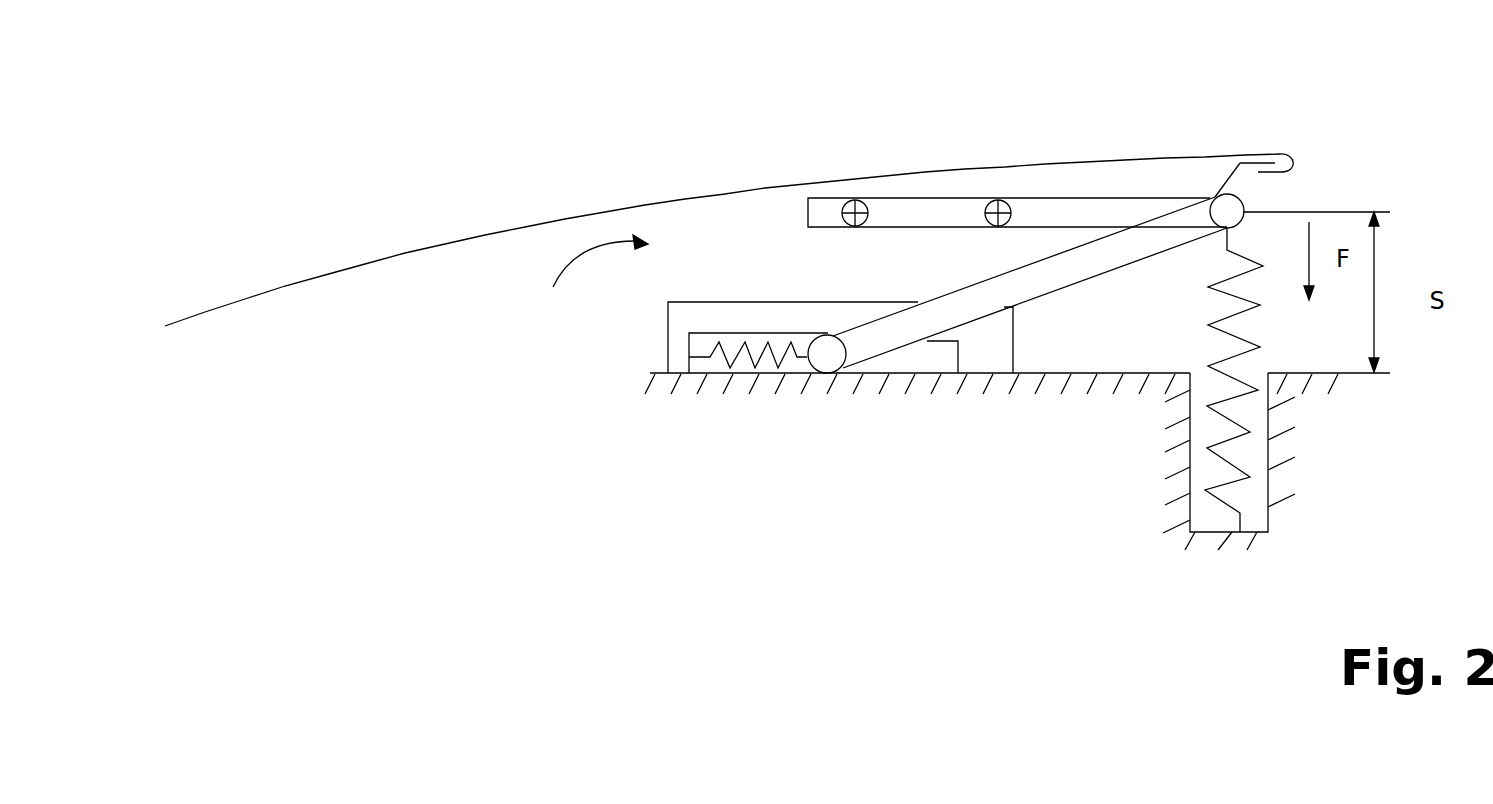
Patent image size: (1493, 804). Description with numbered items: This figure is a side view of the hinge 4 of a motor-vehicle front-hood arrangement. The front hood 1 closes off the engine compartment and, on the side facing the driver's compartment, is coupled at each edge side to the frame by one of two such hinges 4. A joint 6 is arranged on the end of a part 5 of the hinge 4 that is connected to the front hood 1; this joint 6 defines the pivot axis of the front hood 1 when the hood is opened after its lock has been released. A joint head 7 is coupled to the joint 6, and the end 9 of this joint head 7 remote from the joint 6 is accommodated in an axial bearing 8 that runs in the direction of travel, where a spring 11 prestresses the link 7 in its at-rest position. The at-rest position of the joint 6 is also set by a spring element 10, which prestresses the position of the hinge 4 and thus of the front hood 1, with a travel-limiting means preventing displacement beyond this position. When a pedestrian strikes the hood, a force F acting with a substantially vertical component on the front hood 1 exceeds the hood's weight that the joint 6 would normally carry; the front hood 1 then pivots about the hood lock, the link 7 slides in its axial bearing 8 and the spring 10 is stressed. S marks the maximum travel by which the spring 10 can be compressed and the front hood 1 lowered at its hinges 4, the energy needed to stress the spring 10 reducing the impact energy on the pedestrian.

The front hood 1 is at (435, 245).
The hinge 4 is at (592, 279).
The part of the hinge 5 is at (883, 210).
The joint 6 is at (1233, 208).
The joint head 7 is at (1053, 268).
The axial bearing 8 is at (743, 315).
The end of the joint head 9 is at (823, 362).
The spring element 10 is at (1250, 435).
The spring 11 is at (728, 363).